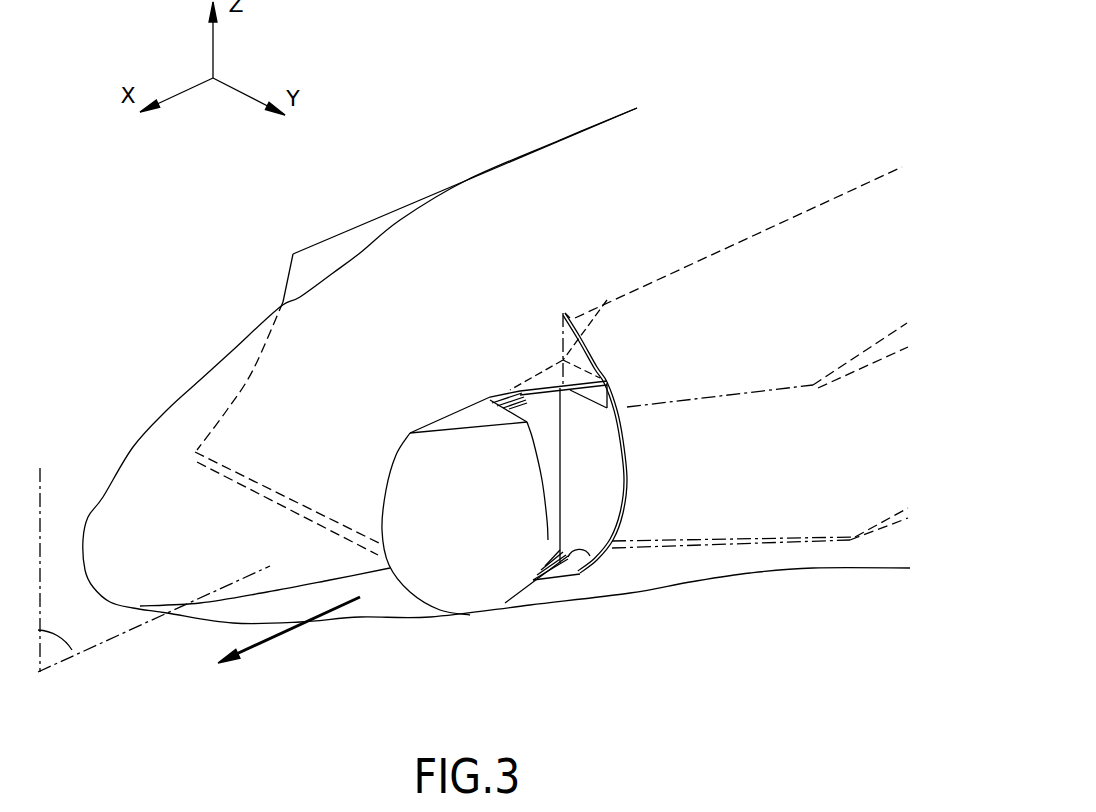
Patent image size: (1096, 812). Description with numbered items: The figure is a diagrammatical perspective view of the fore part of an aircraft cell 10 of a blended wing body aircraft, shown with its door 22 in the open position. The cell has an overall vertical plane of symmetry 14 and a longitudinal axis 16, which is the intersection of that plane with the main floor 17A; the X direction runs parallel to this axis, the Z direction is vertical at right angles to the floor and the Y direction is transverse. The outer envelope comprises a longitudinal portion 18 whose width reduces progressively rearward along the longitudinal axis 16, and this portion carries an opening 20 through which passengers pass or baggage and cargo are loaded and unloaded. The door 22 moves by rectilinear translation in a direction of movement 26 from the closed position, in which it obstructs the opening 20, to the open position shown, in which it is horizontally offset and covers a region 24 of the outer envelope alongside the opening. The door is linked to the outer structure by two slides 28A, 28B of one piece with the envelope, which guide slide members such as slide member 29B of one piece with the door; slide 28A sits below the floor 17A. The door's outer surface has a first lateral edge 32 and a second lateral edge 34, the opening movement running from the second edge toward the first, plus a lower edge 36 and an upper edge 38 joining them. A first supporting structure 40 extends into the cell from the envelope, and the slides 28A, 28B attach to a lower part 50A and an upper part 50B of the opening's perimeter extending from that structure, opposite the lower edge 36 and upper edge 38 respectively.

The aircraft cell 10 is at (478, 128).
The overall vertical plane of symmetry 14 is at (52, 652).
The longitudinal axis 16 is at (135, 632).
The main floor 17A is at (710, 543).
The longitudinal portion 18 is at (817, 580).
The opening 20 is at (552, 540).
The door 22 is at (362, 511).
The region of the outer envelope 24 is at (410, 427).
The direction of movement 26 is at (270, 638).
The slide 28A is at (597, 558).
The slide 28B is at (523, 388).
The slide member 29B is at (775, 388).
The first lateral edge 32 is at (387, 473).
The second lateral edge 34 is at (533, 440).
The lower edge 36 is at (470, 618).
The upper edge 38 is at (458, 425).
The first supporting structure 40 is at (595, 482).
The lower part of the perimeter of the opening 50A is at (567, 578).
The upper part of the perimeter of the opening 50B is at (597, 317).